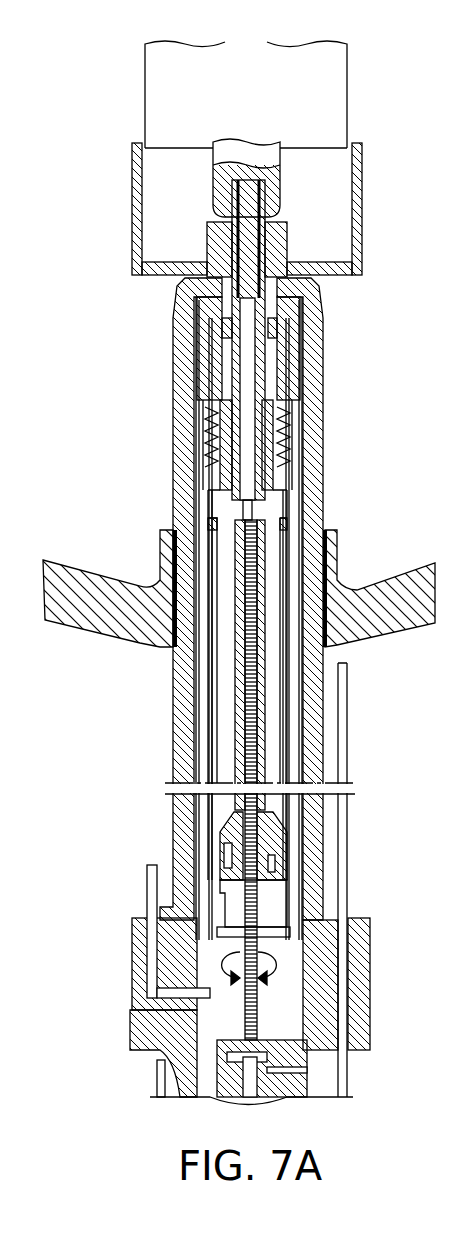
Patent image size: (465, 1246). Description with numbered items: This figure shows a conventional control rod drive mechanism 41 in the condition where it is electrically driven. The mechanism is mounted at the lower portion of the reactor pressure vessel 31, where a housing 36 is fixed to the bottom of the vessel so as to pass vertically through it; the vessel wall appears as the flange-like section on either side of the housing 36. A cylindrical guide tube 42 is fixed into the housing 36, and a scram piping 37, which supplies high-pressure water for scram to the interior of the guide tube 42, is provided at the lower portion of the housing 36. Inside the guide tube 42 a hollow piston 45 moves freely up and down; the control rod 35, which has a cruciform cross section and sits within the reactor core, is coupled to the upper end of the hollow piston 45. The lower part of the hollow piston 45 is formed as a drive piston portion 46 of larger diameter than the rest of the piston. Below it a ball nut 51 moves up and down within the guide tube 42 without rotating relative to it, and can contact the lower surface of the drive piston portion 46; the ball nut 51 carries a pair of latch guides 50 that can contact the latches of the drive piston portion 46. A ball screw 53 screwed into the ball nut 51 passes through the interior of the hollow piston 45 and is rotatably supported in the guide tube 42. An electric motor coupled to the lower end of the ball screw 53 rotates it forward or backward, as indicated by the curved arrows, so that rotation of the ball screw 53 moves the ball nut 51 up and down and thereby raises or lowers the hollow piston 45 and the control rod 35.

The reactor pressure vessel 31 is at (103, 585).
The control rod 35 is at (327, 97).
The housing 36 is at (182, 347).
The scram piping 37 is at (147, 888).
The control rod drive mechanism 41 is at (392, 353).
The guide tube 42 is at (210, 730).
The hollow piston 45 is at (265, 371).
The drive piston portion 46 is at (292, 840).
The latch guide 50 is at (222, 875).
The ball nut 51 is at (273, 892).
The ball screw 53 is at (237, 680).